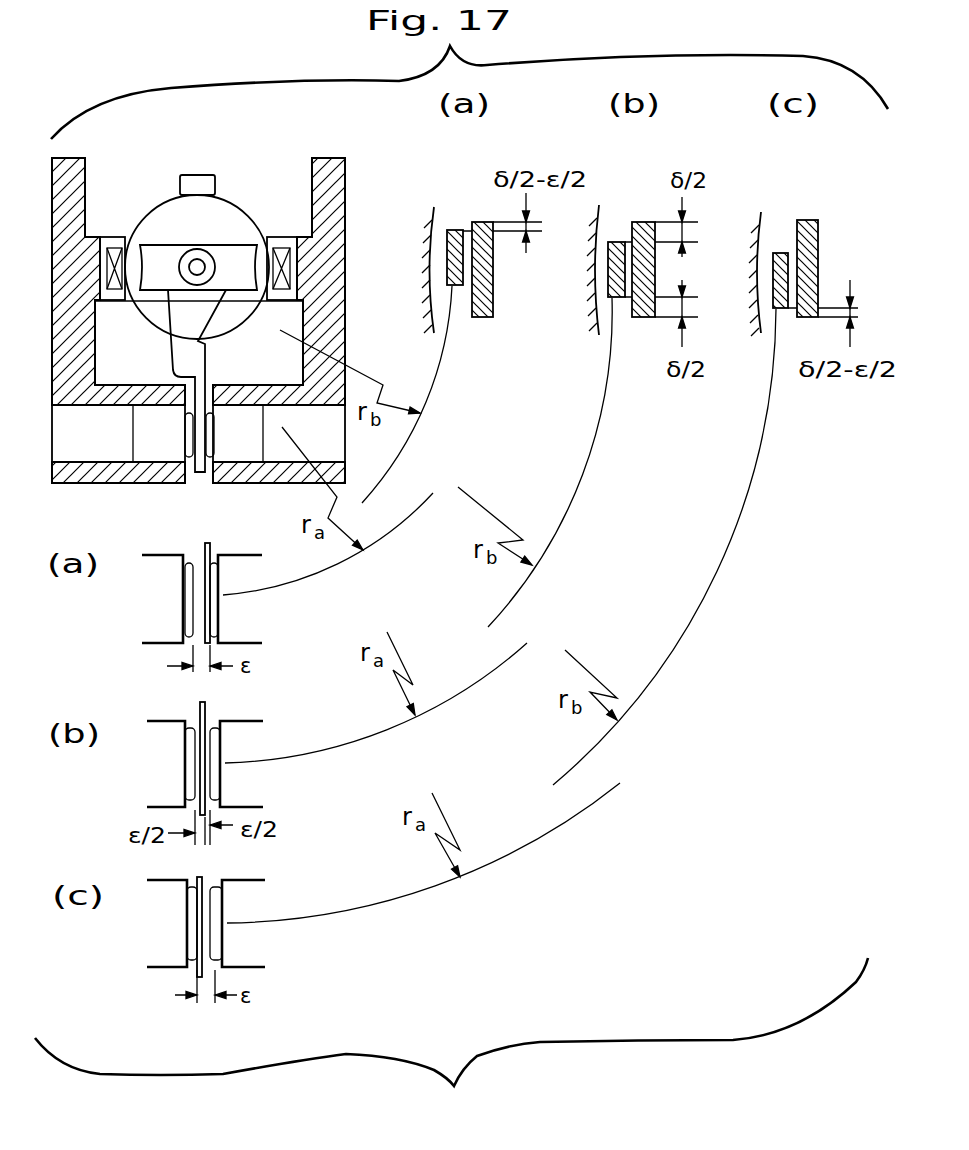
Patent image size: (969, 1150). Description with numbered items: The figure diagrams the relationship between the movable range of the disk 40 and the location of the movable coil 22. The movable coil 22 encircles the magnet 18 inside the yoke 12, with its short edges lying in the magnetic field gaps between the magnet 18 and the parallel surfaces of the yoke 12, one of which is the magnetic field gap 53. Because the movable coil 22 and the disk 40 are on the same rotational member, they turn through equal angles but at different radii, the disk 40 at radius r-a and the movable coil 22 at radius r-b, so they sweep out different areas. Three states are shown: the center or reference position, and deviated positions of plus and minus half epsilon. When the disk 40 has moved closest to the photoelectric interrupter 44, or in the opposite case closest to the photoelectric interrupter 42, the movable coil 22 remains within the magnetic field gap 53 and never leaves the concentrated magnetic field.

The yoke 12 is at (306, 236).
The magnet 18 is at (232, 193).
The movable coil 22 is at (284, 248).
The magnetic field gap 53 is at (454, 229).
The disk 40 is at (202, 465).
The photoelectric interrupter 42 is at (150, 453).
The photoelectric interrupter 44 is at (245, 450).